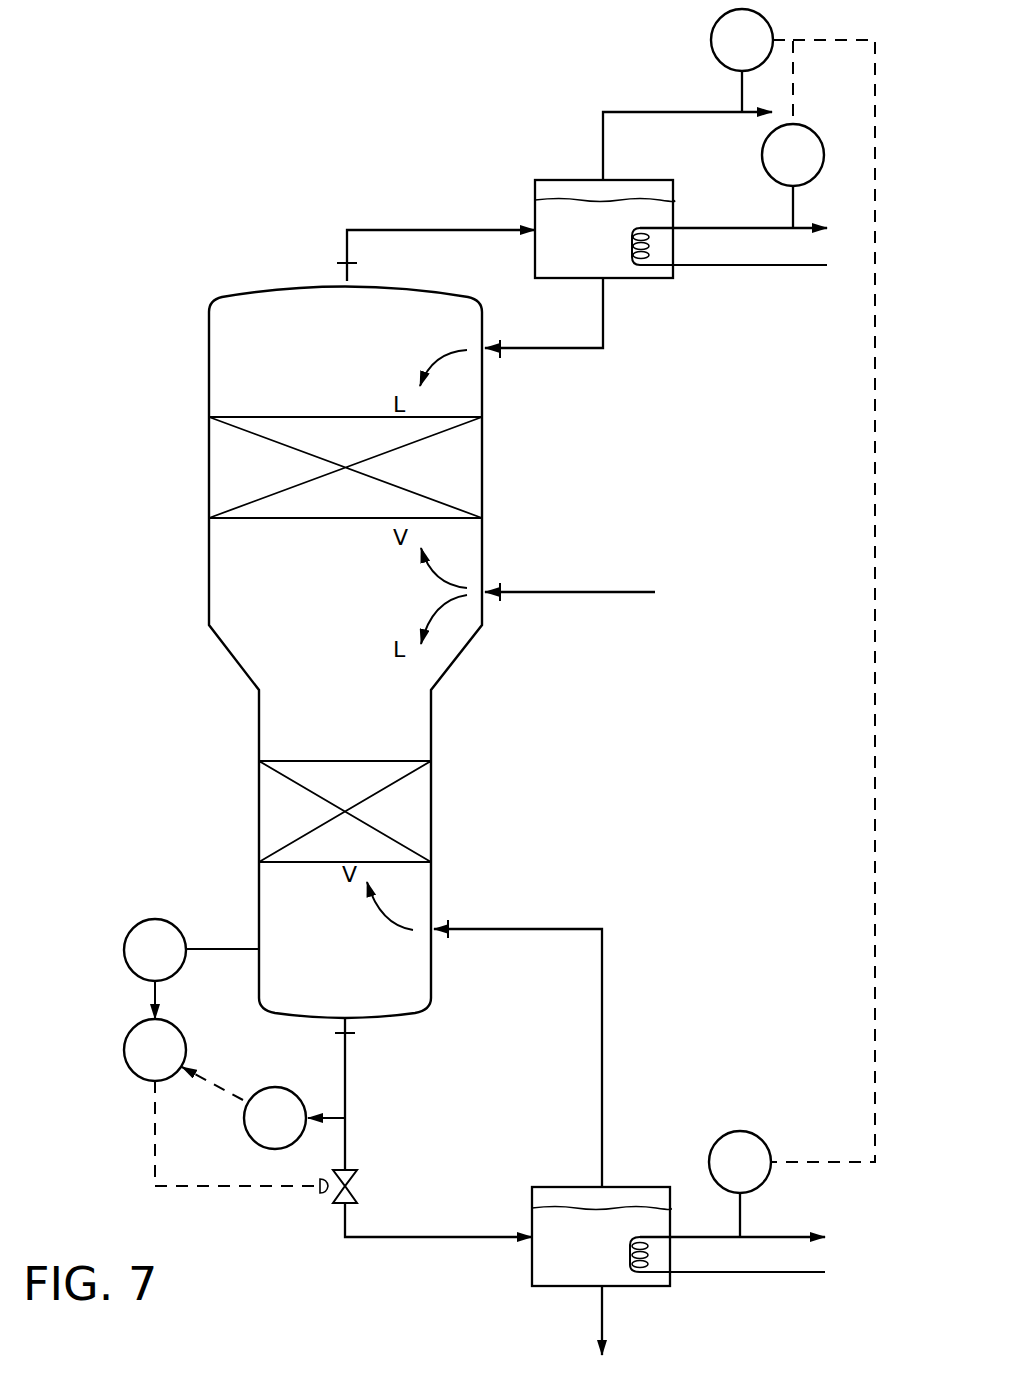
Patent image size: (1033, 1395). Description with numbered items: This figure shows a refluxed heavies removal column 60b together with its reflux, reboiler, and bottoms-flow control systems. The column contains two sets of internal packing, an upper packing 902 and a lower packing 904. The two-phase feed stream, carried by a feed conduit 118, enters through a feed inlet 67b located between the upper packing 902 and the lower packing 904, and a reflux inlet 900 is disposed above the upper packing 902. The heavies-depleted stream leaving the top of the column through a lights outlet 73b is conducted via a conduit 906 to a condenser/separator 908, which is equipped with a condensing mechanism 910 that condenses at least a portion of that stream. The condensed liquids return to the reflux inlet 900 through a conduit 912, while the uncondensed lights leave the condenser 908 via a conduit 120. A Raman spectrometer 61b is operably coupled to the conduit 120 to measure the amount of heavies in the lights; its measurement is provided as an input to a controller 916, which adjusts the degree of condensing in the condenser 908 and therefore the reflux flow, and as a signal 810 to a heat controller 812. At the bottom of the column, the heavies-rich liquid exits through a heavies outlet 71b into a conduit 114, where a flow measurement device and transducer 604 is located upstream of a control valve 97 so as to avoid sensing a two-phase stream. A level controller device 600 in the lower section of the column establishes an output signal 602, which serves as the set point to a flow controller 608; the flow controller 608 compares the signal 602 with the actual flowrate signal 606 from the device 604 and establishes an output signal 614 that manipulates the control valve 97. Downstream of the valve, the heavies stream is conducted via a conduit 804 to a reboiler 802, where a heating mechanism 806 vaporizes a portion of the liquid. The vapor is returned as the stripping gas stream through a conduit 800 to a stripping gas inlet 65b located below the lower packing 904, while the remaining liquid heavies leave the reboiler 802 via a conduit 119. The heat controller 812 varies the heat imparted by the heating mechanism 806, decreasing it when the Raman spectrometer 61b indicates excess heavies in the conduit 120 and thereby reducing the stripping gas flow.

The heavies removal column 60b is at (256, 291).
The Raman spectrometer 61b is at (714, 30).
The stripping gas inlet 65b is at (445, 920).
The feed inlet 67b is at (500, 583).
The heavies outlet 71b is at (351, 1028).
The lights outlet 73b is at (352, 272).
The control valve 97 is at (354, 1199).
The conduit 114 is at (350, 1145).
The feed line 118 is at (615, 592).
The conduit 119 is at (598, 1318).
The conduit 120 is at (618, 110).
The level controller device 600 is at (149, 921).
The output signal 602 is at (152, 1000).
The flow measurement device and transducer 604 is at (263, 1149).
The output signal 606 is at (229, 1096).
The flow controller 608 is at (146, 1080).
The output signal 614 is at (155, 1166).
The conduit 800 is at (561, 929).
The reboiler 802 is at (550, 1187).
The conduit 804 is at (460, 1237).
The heating mechanism 806 is at (640, 1274).
The signal 810 is at (875, 536).
The heat controller 812 is at (711, 1155).
The reflux inlet 900 is at (500, 340).
The upper packing 902 is at (456, 468).
The lower packing 904 is at (436, 811).
The conduit 906 is at (358, 230).
The condenser/separator 908 is at (550, 180).
The condensing mechanism 910 is at (640, 267).
The conduit 912 is at (588, 349).
The controller 916 is at (766, 150).